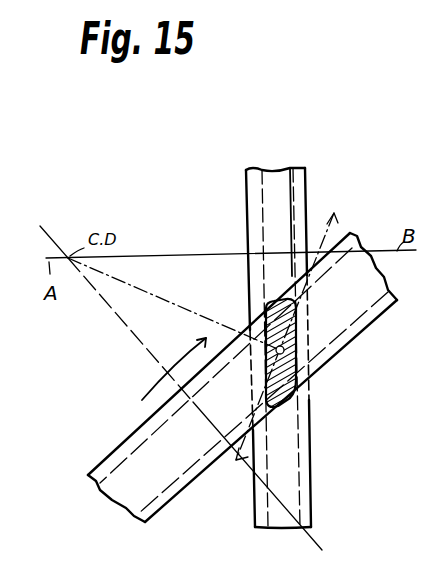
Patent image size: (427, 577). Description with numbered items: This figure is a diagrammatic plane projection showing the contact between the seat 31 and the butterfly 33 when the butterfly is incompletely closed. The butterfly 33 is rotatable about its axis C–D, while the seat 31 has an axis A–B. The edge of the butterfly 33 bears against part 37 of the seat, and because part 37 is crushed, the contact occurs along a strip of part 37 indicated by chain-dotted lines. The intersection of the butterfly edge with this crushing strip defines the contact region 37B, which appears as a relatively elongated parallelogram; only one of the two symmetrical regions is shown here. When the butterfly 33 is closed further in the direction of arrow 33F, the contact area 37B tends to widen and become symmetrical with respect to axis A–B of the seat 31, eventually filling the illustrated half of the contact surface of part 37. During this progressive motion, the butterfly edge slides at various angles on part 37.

The seat 31 is at (308, 202).
The butterfly 33 is at (366, 326).
The arrow indicating closing direction of butterfly 33F is at (120, 409).
The part of seat 37 is at (272, 176).
The contact region 37B is at (284, 346).